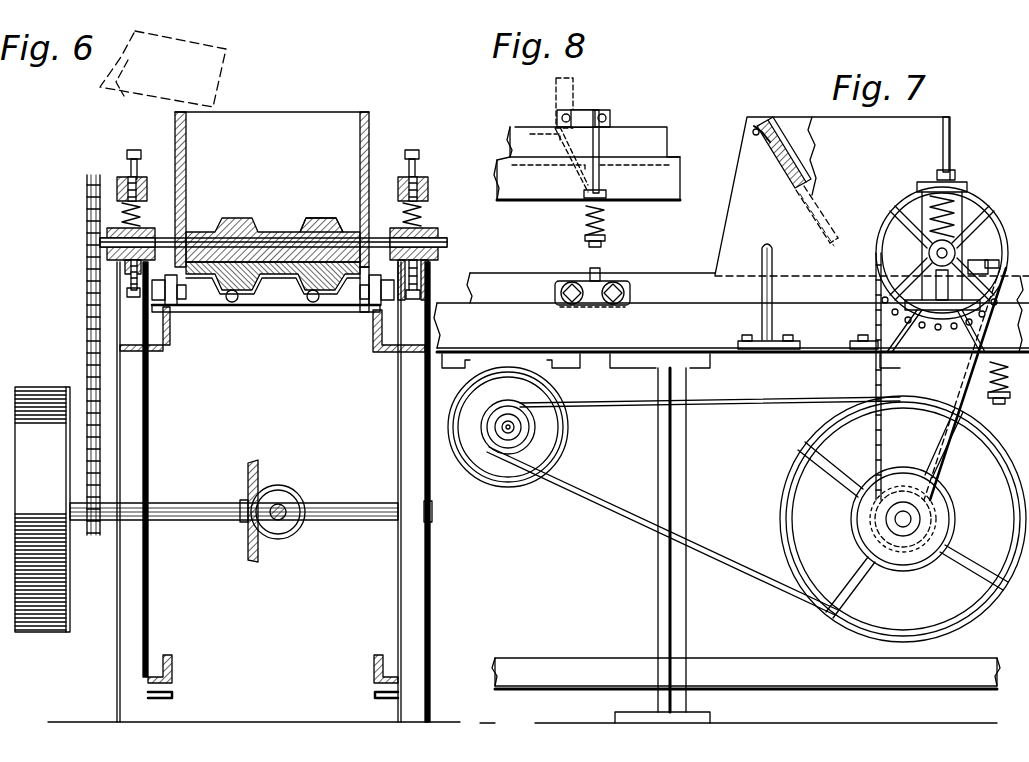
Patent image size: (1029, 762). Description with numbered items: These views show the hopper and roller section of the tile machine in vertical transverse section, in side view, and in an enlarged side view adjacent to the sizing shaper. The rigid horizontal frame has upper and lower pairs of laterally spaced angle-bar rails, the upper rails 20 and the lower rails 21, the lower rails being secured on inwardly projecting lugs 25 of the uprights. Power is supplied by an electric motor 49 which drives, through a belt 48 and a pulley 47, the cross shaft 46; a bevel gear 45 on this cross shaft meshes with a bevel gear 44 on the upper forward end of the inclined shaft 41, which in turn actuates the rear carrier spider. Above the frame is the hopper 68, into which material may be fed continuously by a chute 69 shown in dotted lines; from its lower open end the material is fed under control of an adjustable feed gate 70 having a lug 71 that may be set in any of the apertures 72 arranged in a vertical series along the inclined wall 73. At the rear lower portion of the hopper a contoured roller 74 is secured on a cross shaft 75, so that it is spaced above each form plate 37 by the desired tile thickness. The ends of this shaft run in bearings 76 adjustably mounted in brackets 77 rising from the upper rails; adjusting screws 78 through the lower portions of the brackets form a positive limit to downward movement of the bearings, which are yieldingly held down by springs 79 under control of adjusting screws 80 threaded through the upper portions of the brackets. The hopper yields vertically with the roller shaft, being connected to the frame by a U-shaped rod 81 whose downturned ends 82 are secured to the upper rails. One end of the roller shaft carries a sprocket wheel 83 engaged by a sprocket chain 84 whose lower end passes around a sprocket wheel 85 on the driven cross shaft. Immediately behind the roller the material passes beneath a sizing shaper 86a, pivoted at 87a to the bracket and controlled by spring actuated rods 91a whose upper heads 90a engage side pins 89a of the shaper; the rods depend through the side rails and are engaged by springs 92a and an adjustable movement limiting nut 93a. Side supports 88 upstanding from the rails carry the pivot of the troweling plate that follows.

In FIG. 6, the upper rails 20 is at (172, 340).
In FIG. 8, the upper rails 20 is at (516, 195).
In FIG. 7, the upper rails 20 is at (731, 320).
In FIG. 6, the lower rails 21 is at (173, 670).
In FIG. 7, the lower rails 21 is at (578, 664).
In FIG. 6, the inwardly projecting lugs 25 is at (165, 690).
In FIG. 6, the form plate 37 is at (250, 292).
In FIG. 6, the inclined shaft 41 is at (282, 520).
In FIG. 6, the bevel gear 44 is at (290, 500).
In FIG. 6, the bevel gear 45 is at (260, 470).
In FIG. 6, the cross shaft 46 is at (164, 520).
In FIG. 6, the pulley 47 is at (38, 390).
In FIG. 7, the belt 48 is at (688, 546).
In FIG. 7, the electric motor 49 is at (518, 476).
In FIG. 6, the hopper 68 is at (340, 118).
In FIG. 7, the hopper 68 is at (950, 137).
In FIG. 6, the chute 69 is at (232, 72).
In FIG. 7, the adjustable feed gate 70 is at (800, 190).
In FIG. 7, the lug 71 is at (760, 148).
In FIG. 7, the apertures 72 is at (758, 135).
In FIG. 7, the inclined wall 73 is at (790, 203).
In FIG. 6, the roller 74 is at (255, 218).
In FIG. 6, the cross shaft 75 is at (322, 220).
In FIG. 6, the bearings 76 is at (150, 230).
In FIG. 6, the brackets 77 is at (145, 176).
In FIG. 8, the brackets 77 is at (556, 85).
In FIG. 6, the adjusting screws 78 is at (409, 302).
In FIG. 6, the springs 79 is at (118, 213).
In FIG. 6, the adjusting screws 80 is at (132, 152).
In FIG. 7, the U-shaped rod 81 is at (774, 292).
In FIG. 7, the downturned ends 82 is at (762, 345).
In FIG. 7, the sprocket wheel 83 is at (968, 228).
In FIG. 6, the sprocket chain 84 is at (86, 322).
In FIG. 7, the sprocket chain 84 is at (964, 392).
In FIG. 7, the sprocket wheel 85 is at (940, 502).
In FIG. 8, the sizing shaper 86a is at (578, 112).
In FIG. 7, the sizing shaper 86a is at (982, 318).
In FIG. 8, the pivot 87a is at (560, 112).
In FIG. 8, the side supports 88 is at (560, 164).
In FIG. 8, the side pins 89a is at (612, 116).
In FIG. 8, the upper heads 90a is at (600, 130).
In FIG. 8, the spring actuated rods 91a is at (600, 168).
In FIG. 7, the spring actuated rods 91a is at (978, 322).
In FIG. 8, the springs 92a is at (606, 228).
In FIG. 8, the adjustable movement limiting nut 93a is at (588, 200).